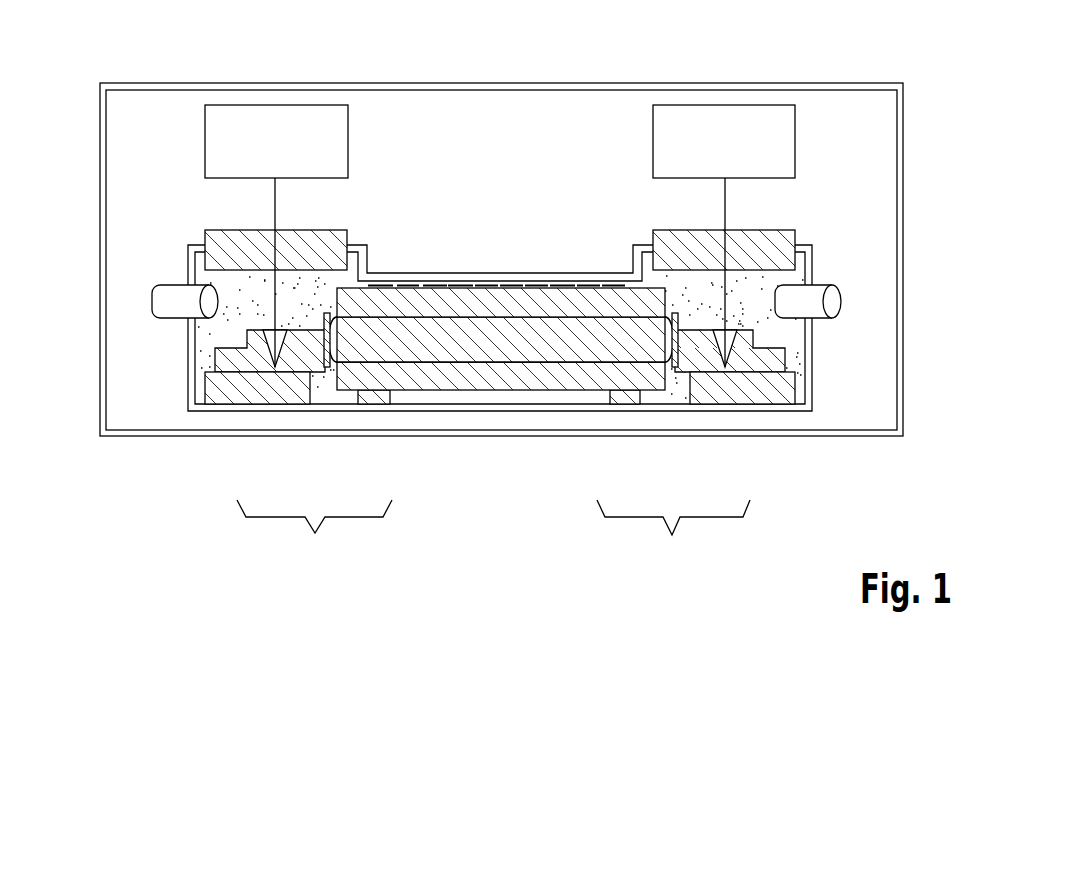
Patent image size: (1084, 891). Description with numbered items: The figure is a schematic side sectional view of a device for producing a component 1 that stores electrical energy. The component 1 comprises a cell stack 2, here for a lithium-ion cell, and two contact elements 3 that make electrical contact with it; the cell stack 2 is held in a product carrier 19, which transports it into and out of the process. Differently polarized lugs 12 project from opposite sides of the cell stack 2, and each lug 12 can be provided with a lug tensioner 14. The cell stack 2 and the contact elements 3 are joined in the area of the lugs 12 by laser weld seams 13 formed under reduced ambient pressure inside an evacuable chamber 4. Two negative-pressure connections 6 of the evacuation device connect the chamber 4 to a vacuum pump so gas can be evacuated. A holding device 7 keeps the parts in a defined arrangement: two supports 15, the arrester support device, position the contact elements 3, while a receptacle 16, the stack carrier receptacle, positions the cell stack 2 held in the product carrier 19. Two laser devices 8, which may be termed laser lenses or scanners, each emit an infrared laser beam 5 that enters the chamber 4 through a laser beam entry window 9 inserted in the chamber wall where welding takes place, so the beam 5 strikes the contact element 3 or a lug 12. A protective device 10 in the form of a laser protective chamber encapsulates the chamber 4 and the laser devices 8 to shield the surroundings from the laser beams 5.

The component 1 is at (510, 353).
The cell stack 2 is at (501, 339).
The contact element 3 is at (217, 362).
The chamber 4 is at (520, 286).
The laser beam 5 is at (275, 199).
The negative-pressure connection 6 is at (150, 305).
The holding device 7 is at (493, 538).
The laser device 8 is at (275, 105).
The laser beam entry window 9 is at (212, 238).
The protective device 10 is at (163, 83).
The lug 12 is at (250, 335).
The laser weld seam 13 is at (735, 338).
The lug tensioner 14 is at (683, 305).
The support 15 is at (273, 414).
The receptacle 16 is at (378, 406).
The product carrier 19 is at (467, 392).